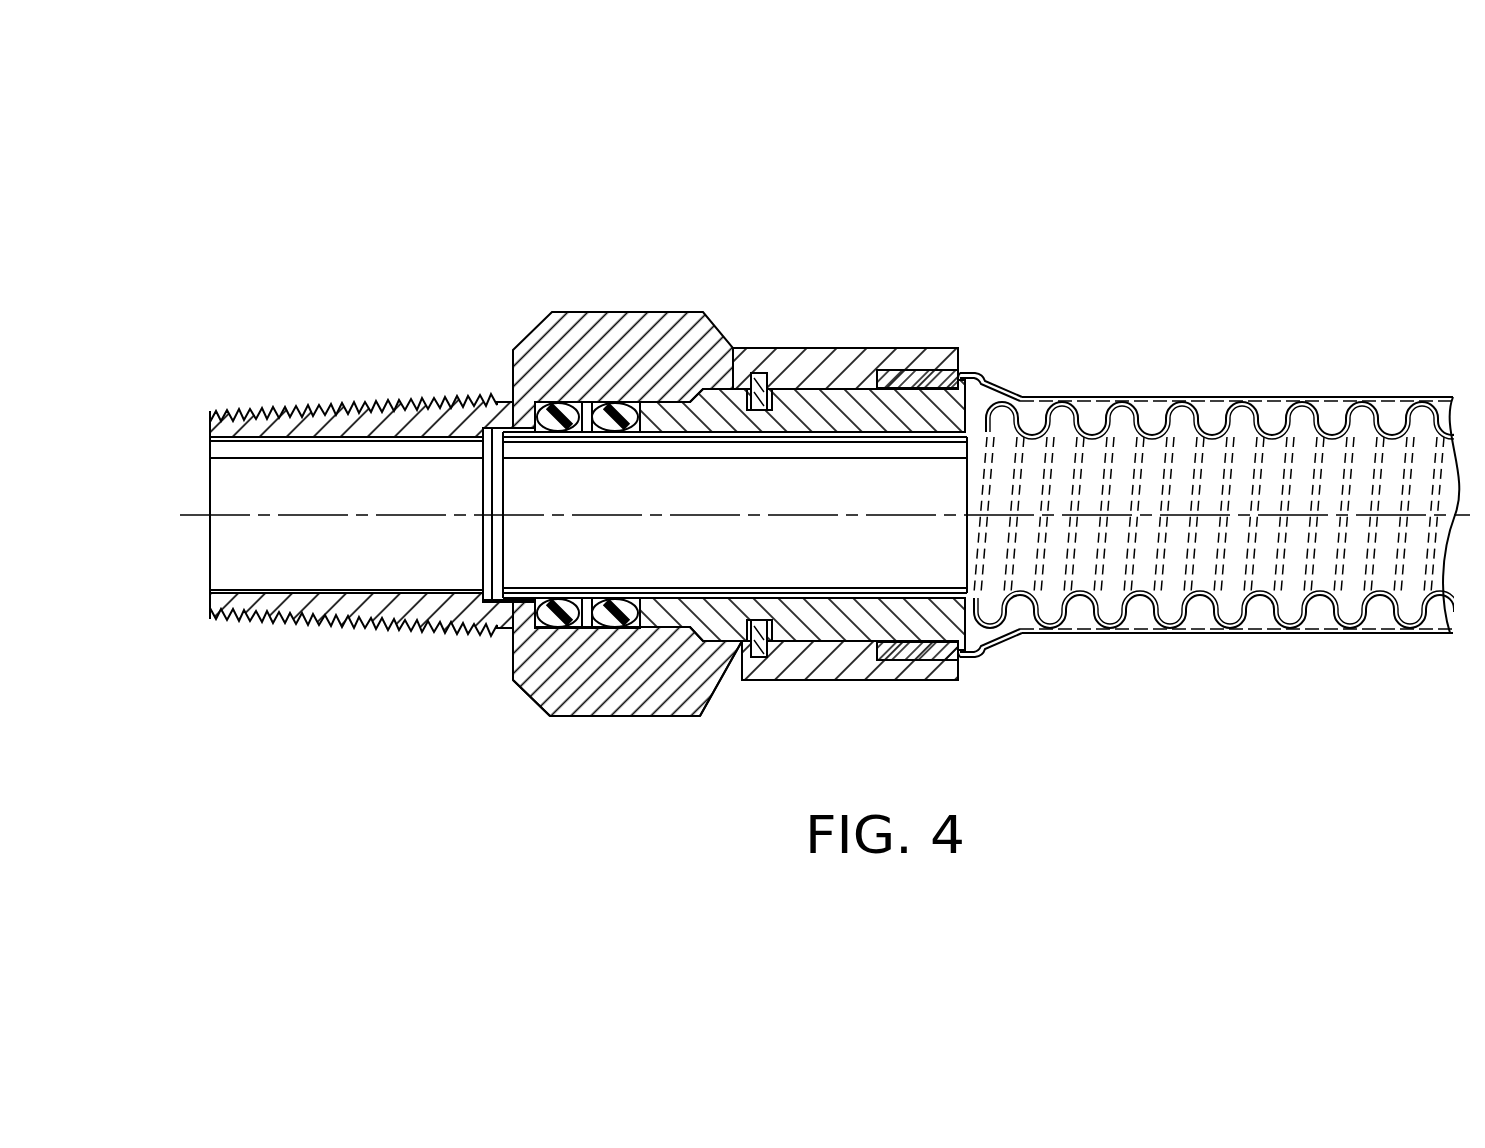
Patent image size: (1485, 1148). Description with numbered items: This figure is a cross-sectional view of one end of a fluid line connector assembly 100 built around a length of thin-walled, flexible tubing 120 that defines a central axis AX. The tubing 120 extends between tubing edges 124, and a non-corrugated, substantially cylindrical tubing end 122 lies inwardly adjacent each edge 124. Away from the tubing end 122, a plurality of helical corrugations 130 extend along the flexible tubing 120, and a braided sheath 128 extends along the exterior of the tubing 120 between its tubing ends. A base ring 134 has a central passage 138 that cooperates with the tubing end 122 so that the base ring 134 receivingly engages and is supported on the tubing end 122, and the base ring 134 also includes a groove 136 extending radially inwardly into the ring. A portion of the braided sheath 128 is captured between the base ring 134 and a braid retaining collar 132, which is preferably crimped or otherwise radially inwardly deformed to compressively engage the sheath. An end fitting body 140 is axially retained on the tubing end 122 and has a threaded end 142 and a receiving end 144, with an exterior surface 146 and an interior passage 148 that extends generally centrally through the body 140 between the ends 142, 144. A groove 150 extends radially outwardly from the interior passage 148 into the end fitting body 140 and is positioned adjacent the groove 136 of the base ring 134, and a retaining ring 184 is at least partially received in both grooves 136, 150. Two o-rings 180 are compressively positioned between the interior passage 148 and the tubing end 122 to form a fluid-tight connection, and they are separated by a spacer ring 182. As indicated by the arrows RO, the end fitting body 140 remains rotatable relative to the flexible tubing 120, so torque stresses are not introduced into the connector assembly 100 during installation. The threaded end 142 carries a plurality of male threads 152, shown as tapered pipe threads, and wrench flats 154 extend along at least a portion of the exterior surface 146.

The fluid line connector assembly 100 is at (814, 478).
The thin-walled flexible tubing 120 is at (1334, 413).
The tubing end 122 is at (807, 548).
The tubing edge 124 is at (507, 627).
The braided sheath 128 is at (1211, 396).
The helical corrugations 130 is at (1093, 398).
The braid retaining collar 132 is at (963, 348).
The base ring 134 is at (822, 392).
The groove 136 is at (790, 372).
The central passage 138 is at (744, 370).
The end fitting body 140 is at (556, 308).
The threaded end 142 is at (278, 632).
The receiving end 144 is at (955, 685).
The exterior surface 146 is at (530, 698).
The interior passage 148 is at (445, 478).
The groove 150 is at (733, 653).
The male threads 152 is at (305, 410).
The wrench flats 154 is at (641, 312).
The o-rings 180 is at (612, 592).
The spacer ring 182 is at (584, 400).
The retaining ring 184 is at (758, 620).
The central axis AX is at (805, 512).
The rotation arrows RO is at (960, 262).